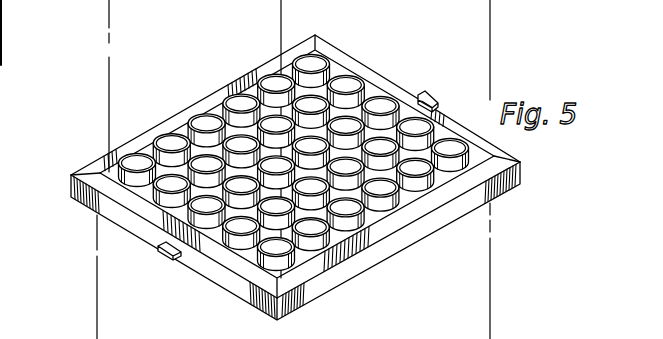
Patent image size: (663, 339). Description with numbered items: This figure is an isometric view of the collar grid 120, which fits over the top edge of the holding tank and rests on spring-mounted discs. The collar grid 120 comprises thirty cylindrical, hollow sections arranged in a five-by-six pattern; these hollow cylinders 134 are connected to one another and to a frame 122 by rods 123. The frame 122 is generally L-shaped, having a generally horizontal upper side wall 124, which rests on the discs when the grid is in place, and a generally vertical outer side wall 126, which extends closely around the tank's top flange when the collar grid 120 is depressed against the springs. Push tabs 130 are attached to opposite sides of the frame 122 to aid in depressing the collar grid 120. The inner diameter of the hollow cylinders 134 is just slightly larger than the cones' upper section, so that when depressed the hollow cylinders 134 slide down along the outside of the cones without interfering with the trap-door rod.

The collar grid 120 is at (322, 166).
The frame 122 is at (448, 213).
The rods 123 is at (250, 242).
The upper side wall 124 is at (355, 67).
The outer side wall 126 is at (335, 278).
The push tabs 130 is at (163, 254).
The hollow cylinders 134 is at (107, 158).